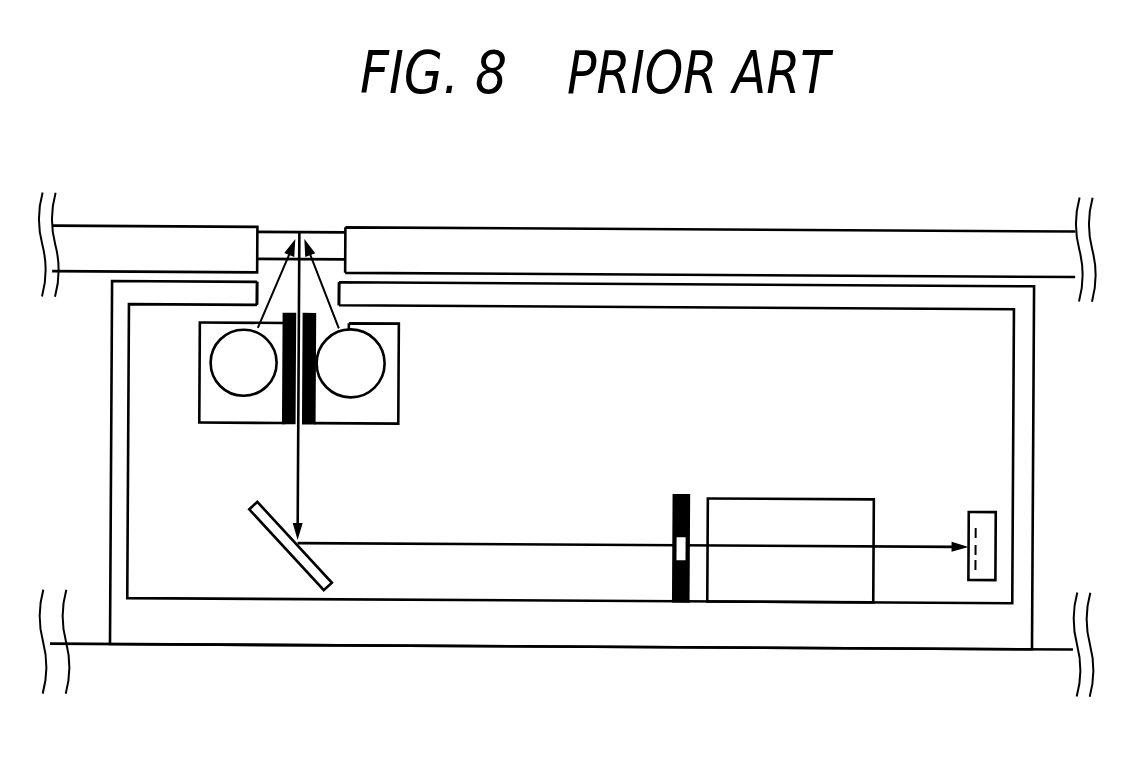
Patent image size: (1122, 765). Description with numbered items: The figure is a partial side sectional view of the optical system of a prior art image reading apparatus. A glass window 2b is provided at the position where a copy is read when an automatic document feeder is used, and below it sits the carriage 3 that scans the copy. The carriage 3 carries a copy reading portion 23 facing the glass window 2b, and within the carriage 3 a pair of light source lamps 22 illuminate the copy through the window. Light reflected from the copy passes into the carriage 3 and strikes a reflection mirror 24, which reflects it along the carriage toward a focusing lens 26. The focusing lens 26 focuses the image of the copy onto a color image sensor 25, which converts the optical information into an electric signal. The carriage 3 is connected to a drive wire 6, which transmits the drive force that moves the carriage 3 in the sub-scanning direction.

The glass window 2b is at (318, 230).
The copy reading portion 23 is at (300, 296).
The light source lamp 22 is at (383, 360).
The carriage 3 is at (110, 433).
The drive wire 6 is at (165, 644).
The reflection mirror 24 is at (287, 552).
The focusing lens 26 is at (822, 584).
The color image sensor 25 is at (983, 575).